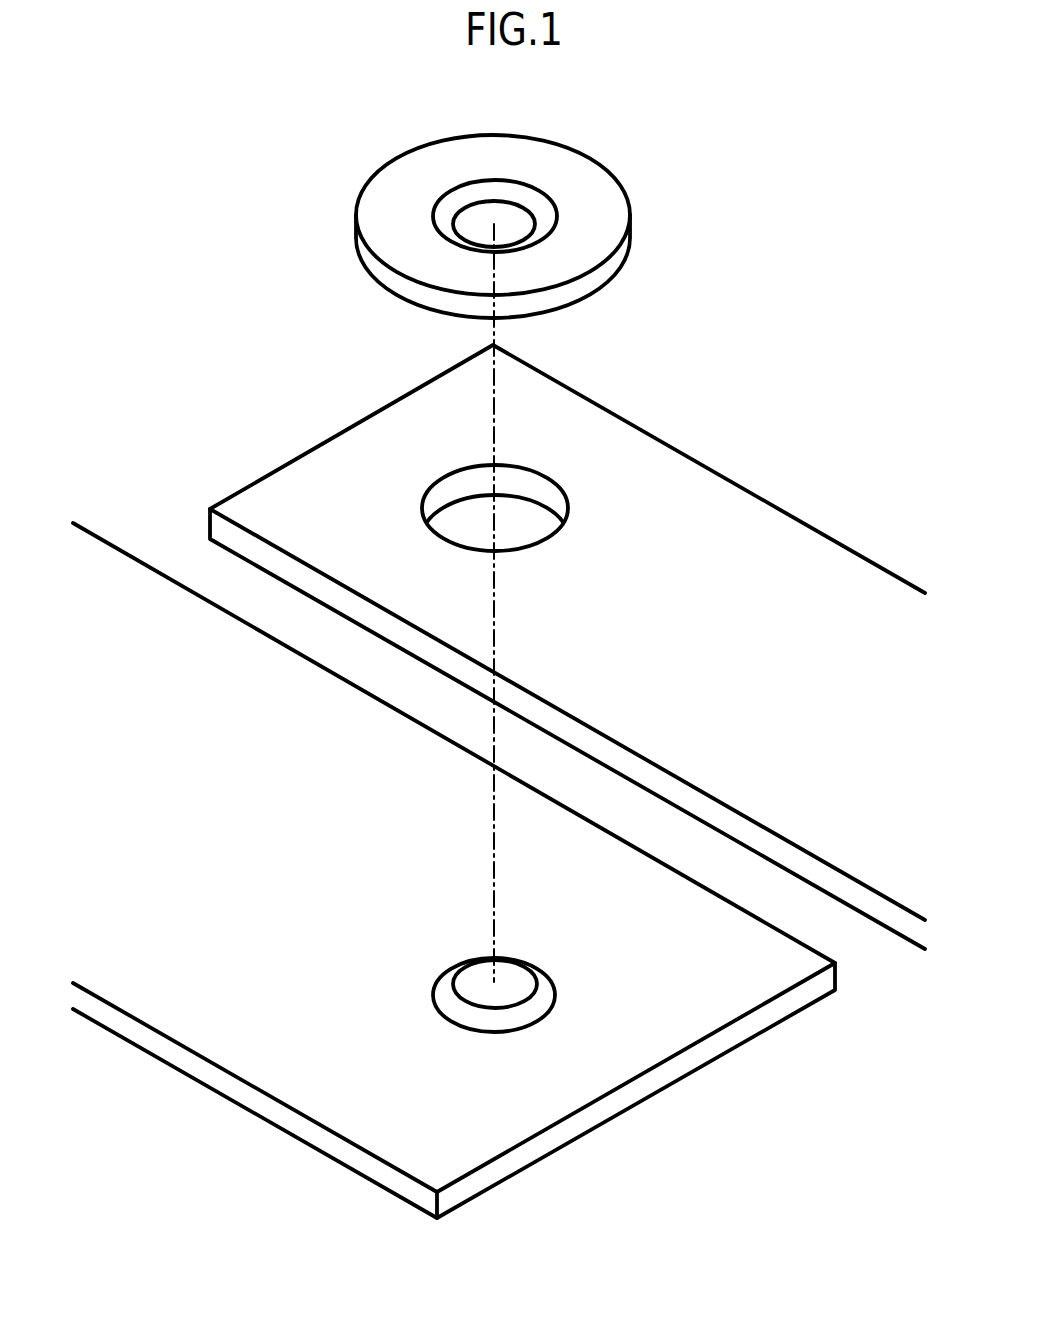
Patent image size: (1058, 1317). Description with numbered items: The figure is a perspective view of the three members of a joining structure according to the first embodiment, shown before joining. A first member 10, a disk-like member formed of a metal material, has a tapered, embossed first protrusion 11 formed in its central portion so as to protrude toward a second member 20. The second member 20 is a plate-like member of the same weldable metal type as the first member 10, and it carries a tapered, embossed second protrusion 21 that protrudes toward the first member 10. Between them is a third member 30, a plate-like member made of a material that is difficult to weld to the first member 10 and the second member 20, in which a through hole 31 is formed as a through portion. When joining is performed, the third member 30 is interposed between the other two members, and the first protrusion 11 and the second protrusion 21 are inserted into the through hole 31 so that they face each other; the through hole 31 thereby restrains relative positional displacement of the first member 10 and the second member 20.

The first member 10 is at (625, 213).
The first protrusion 11 is at (504, 210).
The second member 20 is at (678, 1074).
The second protrusion 21 is at (513, 970).
The third member 30 is at (697, 468).
The through hole 31 is at (530, 537).